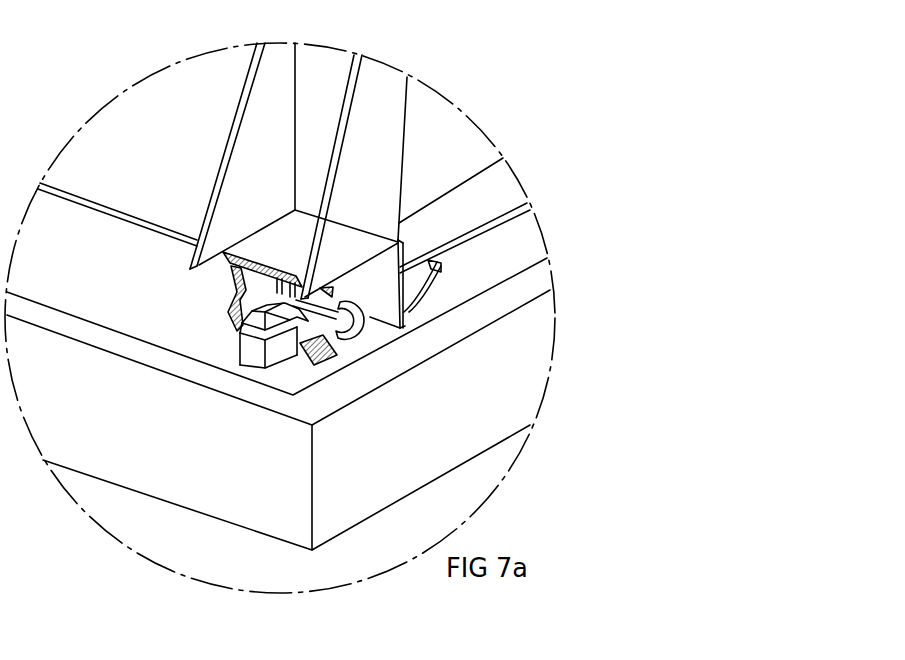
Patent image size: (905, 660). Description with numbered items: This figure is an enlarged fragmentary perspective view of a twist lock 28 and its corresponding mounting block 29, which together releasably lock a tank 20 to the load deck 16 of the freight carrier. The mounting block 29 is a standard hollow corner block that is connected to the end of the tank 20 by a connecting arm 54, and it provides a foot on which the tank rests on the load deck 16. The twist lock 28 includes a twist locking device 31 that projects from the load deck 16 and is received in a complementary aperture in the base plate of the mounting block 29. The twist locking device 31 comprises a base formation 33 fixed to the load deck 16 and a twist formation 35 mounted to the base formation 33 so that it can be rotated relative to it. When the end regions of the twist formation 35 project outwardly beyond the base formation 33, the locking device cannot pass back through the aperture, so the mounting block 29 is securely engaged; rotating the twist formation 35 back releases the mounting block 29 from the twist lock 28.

The load deck 16 is at (515, 393).
The tank 20 is at (463, 137).
The connecting arm 54 is at (383, 153).
The mounting block 29 is at (382, 322).
The twist formation 35 is at (240, 310).
The twist lock 28 is at (252, 357).
The twist locking device 31 is at (231, 350).
The base formation 33 is at (277, 355).